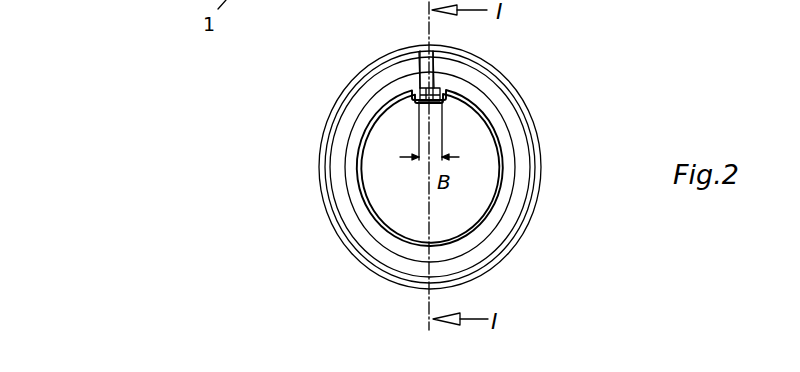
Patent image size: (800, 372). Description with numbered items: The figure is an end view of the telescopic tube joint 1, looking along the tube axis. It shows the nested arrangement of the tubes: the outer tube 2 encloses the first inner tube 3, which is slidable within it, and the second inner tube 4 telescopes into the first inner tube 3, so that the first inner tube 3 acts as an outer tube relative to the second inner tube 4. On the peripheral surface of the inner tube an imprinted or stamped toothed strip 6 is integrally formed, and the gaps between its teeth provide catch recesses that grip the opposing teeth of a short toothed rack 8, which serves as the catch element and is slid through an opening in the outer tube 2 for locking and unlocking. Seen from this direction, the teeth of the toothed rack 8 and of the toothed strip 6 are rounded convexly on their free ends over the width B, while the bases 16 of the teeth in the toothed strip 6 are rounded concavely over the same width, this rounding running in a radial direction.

The telescopic tube joint 1 is at (331, 228).
The outer tube 2 is at (500, 76).
The first inner tube 3 is at (503, 118).
The second inner tube 4 is at (503, 167).
The toothed strip 6 is at (435, 103).
The toothed rack 8 is at (428, 84).
The bases of the teeth 16 is at (415, 50).